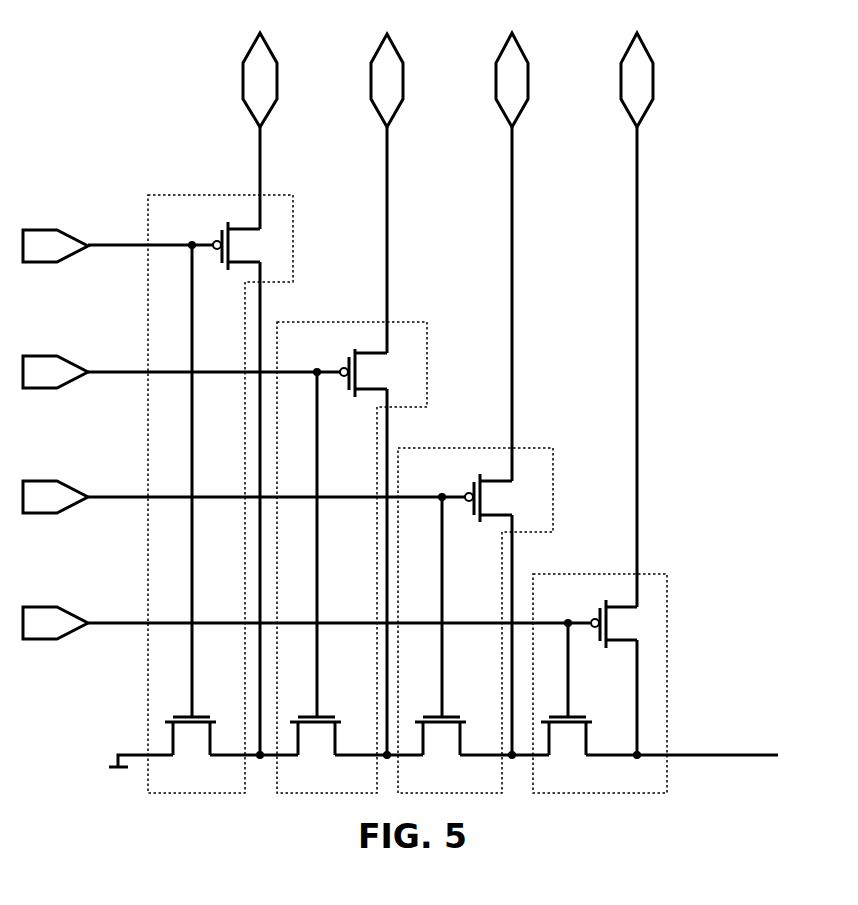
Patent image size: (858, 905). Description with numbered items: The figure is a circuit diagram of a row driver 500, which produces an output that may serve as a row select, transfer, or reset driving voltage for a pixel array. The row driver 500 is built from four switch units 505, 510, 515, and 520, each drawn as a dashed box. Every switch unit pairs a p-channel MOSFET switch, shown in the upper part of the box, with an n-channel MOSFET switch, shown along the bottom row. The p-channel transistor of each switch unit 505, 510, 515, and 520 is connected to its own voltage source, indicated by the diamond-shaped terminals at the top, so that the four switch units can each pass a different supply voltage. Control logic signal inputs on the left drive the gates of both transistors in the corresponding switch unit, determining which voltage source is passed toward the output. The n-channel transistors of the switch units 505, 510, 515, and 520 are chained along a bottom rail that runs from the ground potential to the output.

The row driver 500 is at (787, 139).
The switch unit 505 is at (657, 574).
The switch unit 510 is at (539, 448).
The switch unit 515 is at (419, 322).
The switch unit 520 is at (282, 195).